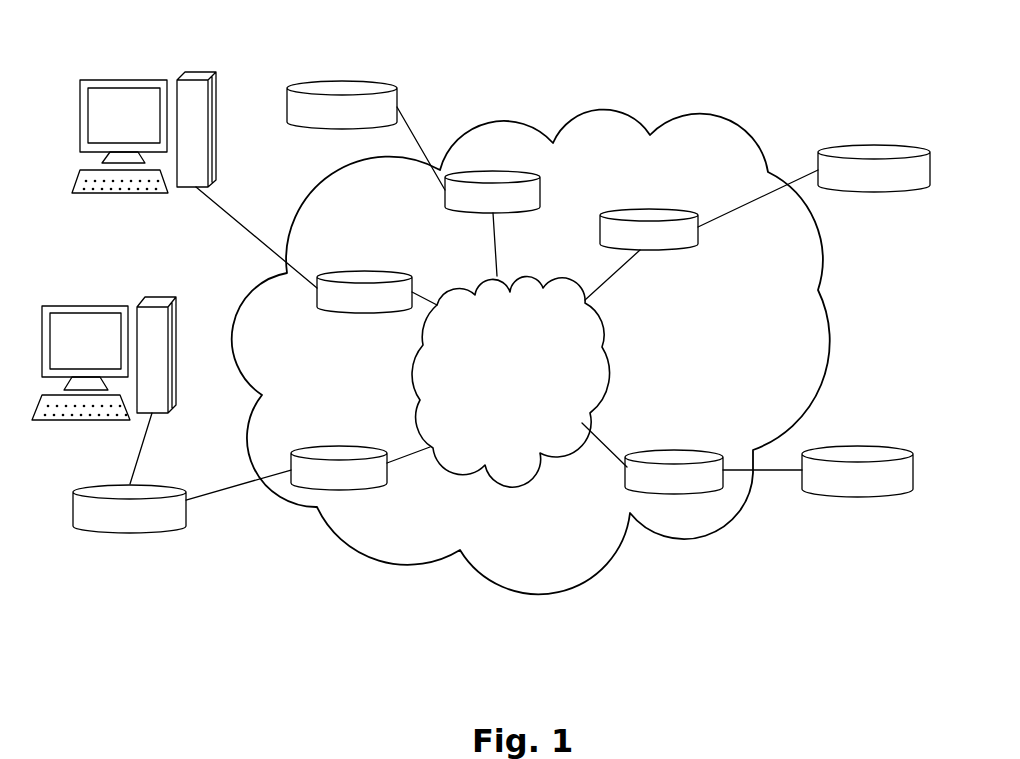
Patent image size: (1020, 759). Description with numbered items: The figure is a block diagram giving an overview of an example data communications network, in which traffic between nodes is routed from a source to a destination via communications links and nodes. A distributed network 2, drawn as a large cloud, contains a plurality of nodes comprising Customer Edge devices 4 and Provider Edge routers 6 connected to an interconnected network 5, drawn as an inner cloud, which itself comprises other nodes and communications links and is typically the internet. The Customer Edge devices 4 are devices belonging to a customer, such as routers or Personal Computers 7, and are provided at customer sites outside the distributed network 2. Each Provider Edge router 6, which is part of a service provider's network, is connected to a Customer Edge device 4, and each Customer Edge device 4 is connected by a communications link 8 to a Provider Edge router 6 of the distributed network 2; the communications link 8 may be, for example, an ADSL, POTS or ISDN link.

The distributed network 2 is at (496, 123).
The Customer Edge device 4 is at (858, 445).
The interconnected network 5 is at (510, 382).
The Provider Edge router 6 is at (673, 450).
The Personal Computer 7 is at (133, 72).
The communications link 8 is at (223, 493).